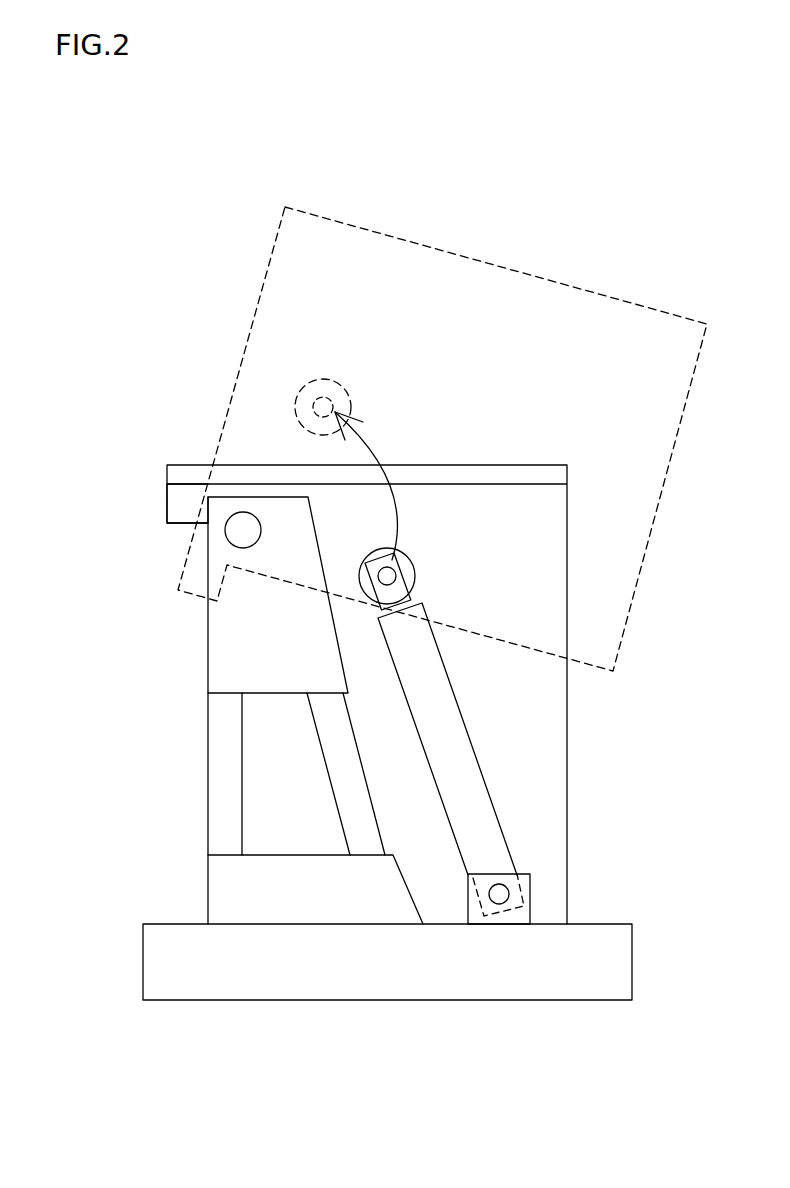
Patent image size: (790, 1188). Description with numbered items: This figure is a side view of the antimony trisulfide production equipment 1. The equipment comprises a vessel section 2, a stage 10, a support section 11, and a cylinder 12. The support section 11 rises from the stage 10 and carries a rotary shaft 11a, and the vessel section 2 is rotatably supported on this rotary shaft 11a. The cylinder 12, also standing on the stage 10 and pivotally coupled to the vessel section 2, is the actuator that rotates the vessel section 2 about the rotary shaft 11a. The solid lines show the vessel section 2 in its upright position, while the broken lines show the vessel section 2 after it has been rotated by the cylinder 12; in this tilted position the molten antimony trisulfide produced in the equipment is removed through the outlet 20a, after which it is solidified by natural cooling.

The production equipment 1 is at (433, 87).
The vessel section 2 is at (457, 256).
The outlet 20a is at (167, 508).
The stage 10 is at (610, 922).
The support section 11 is at (233, 639).
The rotary shaft 11a is at (226, 540).
The cylinder 12 is at (497, 803).